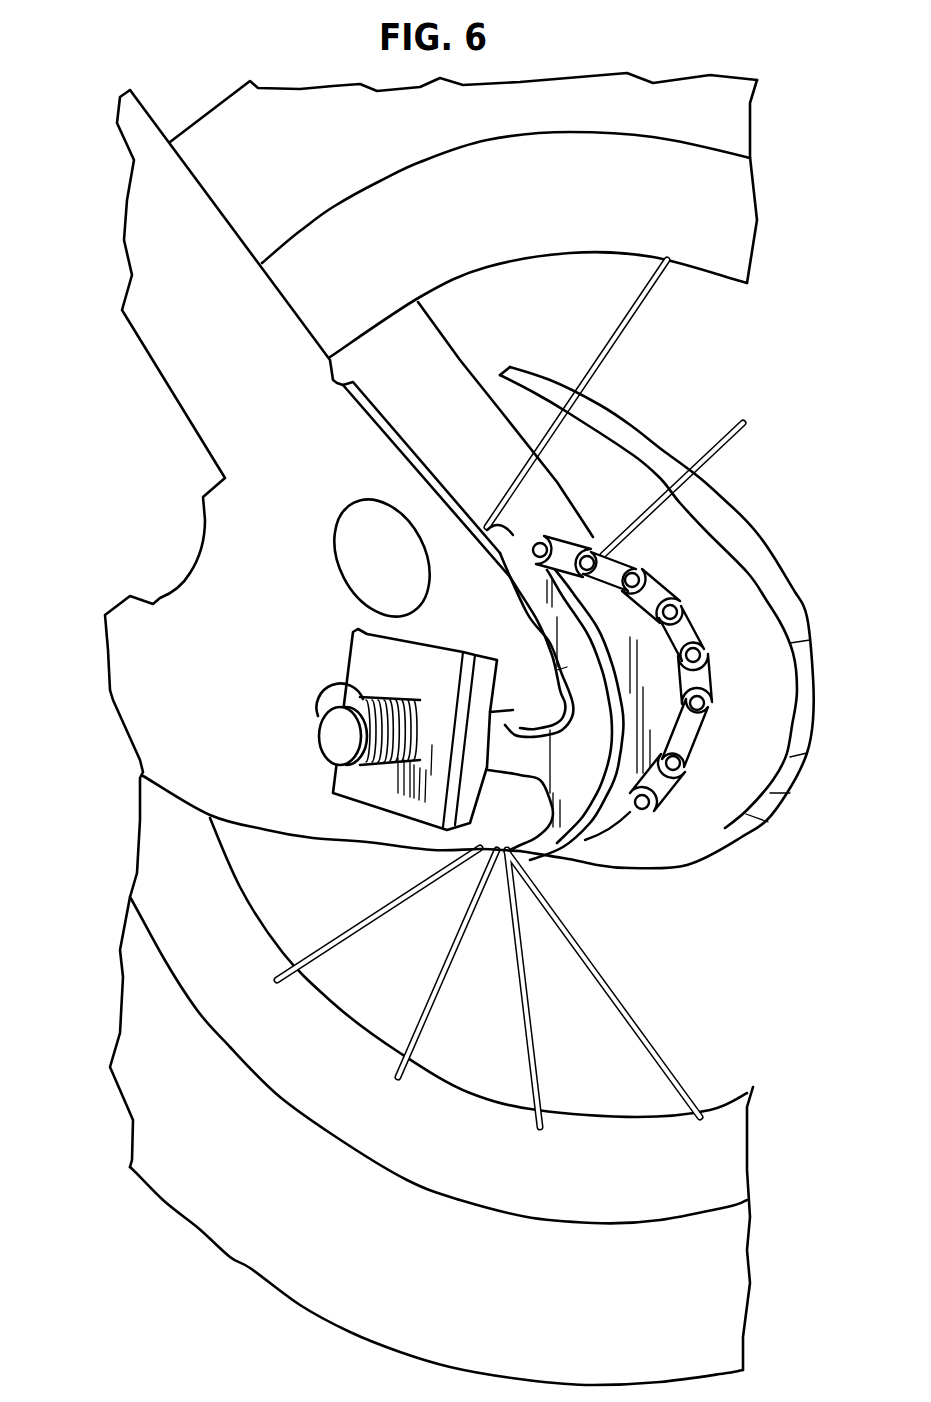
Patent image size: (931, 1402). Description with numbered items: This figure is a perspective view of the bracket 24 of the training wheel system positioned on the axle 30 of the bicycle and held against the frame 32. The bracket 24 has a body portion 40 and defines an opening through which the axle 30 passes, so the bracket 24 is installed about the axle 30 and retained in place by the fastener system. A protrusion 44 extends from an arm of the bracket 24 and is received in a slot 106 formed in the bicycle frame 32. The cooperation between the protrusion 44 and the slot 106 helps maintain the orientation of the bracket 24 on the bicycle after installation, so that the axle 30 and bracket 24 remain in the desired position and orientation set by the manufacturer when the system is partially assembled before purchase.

The bracket 24 is at (375, 652).
The axle 30 is at (335, 740).
The frame 32 is at (460, 587).
The body portion 40 is at (437, 700).
The protrusion 44 is at (477, 753).
The slot 106 is at (557, 732).